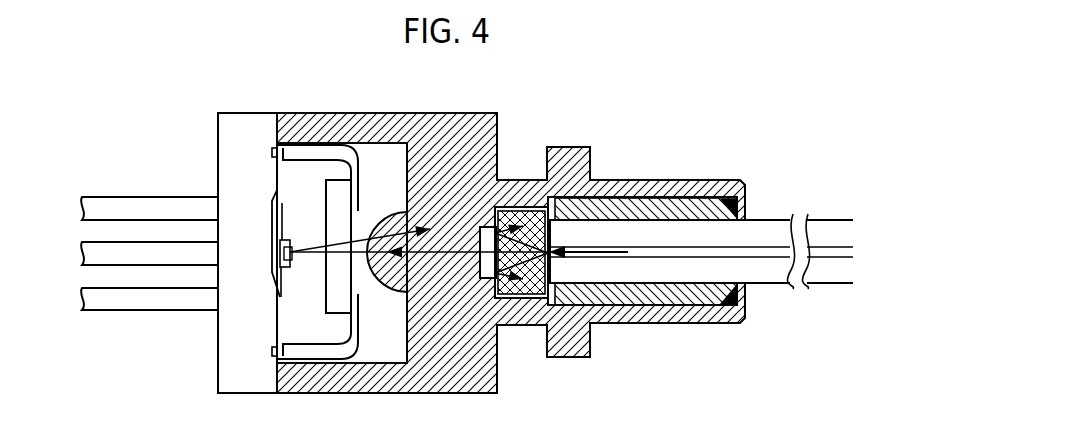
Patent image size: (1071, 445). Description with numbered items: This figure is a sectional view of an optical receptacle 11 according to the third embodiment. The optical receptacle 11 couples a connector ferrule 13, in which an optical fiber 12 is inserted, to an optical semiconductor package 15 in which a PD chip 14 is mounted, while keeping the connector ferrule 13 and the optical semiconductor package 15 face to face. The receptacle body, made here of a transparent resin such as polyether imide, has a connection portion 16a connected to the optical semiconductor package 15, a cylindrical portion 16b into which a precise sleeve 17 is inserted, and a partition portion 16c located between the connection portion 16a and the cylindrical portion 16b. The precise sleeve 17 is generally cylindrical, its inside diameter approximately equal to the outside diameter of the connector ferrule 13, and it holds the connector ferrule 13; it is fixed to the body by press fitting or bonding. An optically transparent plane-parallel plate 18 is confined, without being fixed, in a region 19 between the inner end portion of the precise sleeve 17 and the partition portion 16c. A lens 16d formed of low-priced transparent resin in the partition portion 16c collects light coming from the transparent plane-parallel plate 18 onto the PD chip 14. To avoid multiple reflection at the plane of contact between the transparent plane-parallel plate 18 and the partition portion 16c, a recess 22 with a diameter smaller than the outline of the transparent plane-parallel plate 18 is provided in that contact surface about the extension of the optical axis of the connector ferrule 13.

The optical receptacle 11 is at (640, 345).
The optical fiber 12 is at (763, 253).
The connector ferrule 13 is at (693, 230).
The PD chip 14 is at (293, 242).
The optical semiconductor package 15 is at (242, 173).
The connection portion 16a is at (320, 118).
The cylindrical portion 16b is at (625, 196).
The partition portion 16c is at (485, 163).
The lens 16d is at (384, 292).
The precise sleeve 17 is at (663, 203).
The transparent plane-parallel plate 18 is at (541, 297).
The region 19 is at (558, 297).
The recess 22 is at (463, 290).